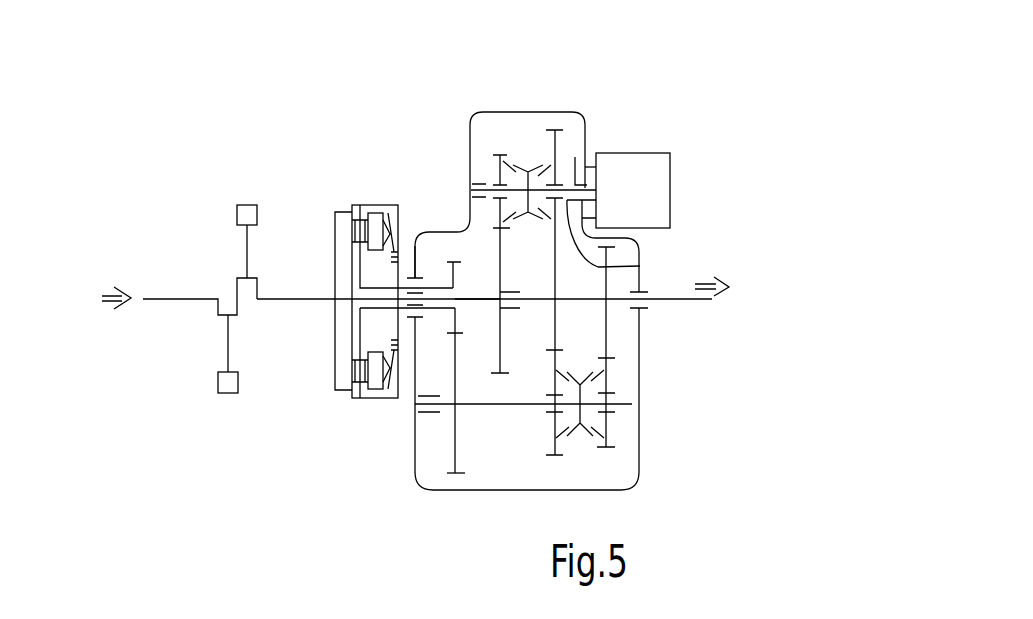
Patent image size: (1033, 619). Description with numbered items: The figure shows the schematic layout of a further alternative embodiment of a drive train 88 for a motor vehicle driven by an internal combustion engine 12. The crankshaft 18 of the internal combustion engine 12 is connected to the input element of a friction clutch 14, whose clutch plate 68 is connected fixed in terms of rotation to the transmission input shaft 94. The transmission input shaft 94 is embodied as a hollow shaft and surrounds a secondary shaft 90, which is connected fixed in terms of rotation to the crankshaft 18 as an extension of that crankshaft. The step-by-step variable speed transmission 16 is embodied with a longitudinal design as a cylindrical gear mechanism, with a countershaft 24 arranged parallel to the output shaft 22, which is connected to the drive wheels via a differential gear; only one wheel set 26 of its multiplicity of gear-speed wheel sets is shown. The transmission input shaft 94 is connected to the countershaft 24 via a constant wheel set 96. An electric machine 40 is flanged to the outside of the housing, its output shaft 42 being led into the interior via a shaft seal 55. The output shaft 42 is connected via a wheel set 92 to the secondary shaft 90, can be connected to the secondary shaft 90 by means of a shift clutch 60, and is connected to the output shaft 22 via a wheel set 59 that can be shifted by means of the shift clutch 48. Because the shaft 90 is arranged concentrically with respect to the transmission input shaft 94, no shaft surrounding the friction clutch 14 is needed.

The drive train 88 is at (193, 175).
The internal combustion engine 12 is at (218, 307).
The crankshaft 18 is at (302, 297).
The friction clutch 14 is at (364, 361).
The clutch plate 68 is at (363, 382).
The transmission input shaft 94 is at (470, 299).
The secondary shaft 90 is at (479, 299).
The step-by-step variable speed transmission 16 is at (663, 407).
The wheel set 92 is at (495, 145).
The wheel set 59 is at (562, 150).
The shift clutch 60 is at (522, 157).
The shift clutch 48 is at (539, 148).
The shaft seal 55 is at (583, 157).
The electric machine 40 is at (672, 185).
The output shaft of the electric machine 42 is at (640, 265).
The output shaft 22 is at (665, 300).
The countershaft 24 is at (492, 405).
The wheel set 26 is at (453, 450).
The constant wheel set 96 is at (458, 480).